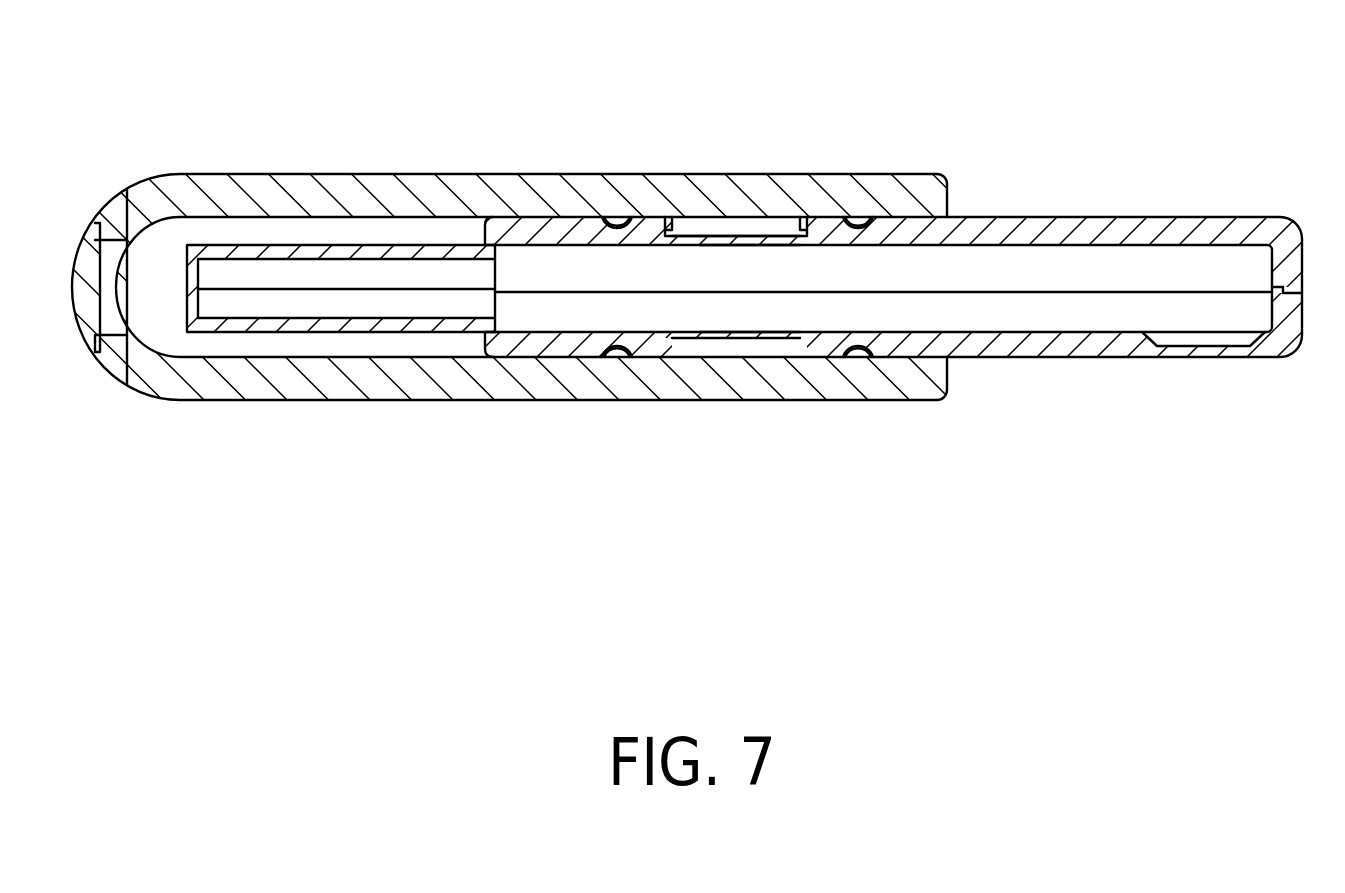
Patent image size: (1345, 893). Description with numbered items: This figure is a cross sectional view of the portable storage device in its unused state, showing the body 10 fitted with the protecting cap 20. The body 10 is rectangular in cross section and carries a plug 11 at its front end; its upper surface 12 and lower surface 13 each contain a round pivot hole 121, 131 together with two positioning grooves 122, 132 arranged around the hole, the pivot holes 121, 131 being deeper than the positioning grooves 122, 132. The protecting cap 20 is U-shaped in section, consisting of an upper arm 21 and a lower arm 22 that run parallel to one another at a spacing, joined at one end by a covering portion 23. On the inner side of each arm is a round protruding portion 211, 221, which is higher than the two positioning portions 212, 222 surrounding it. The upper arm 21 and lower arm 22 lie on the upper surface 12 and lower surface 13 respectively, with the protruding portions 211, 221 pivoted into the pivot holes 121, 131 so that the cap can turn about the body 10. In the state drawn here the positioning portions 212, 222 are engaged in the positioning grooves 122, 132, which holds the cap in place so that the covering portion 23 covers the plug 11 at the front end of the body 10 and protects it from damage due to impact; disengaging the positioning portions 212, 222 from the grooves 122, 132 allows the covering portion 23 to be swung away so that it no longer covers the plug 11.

The body 10 is at (1228, 362).
The plug 11 is at (245, 323).
The upper surface 12 is at (1007, 217).
The lower surface 13 is at (1097, 360).
The pivot hole 121 is at (758, 248).
The positioning grooves 122 is at (603, 224).
The pivot hole 131 is at (757, 333).
The positioning grooves 132 is at (600, 343).
The protecting cap 20 is at (672, 446).
The upper arm 21 is at (418, 173).
The lower arm 22 is at (357, 400).
The covering portion 23 is at (147, 197).
The protruding portion 211 is at (700, 234).
The positioning portions 212 is at (617, 217).
The protruding portion 221 is at (703, 346).
The positioning portions 222 is at (613, 357).